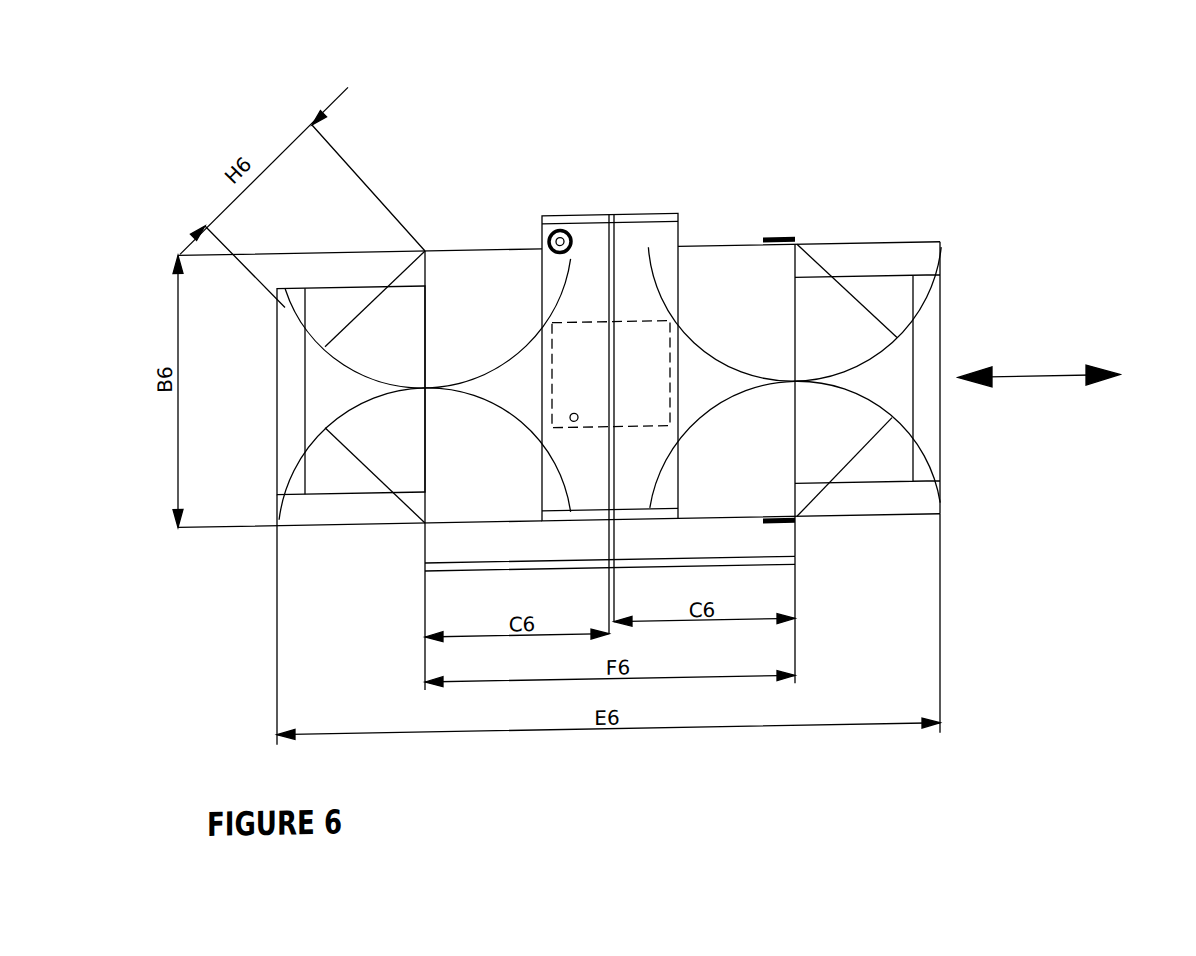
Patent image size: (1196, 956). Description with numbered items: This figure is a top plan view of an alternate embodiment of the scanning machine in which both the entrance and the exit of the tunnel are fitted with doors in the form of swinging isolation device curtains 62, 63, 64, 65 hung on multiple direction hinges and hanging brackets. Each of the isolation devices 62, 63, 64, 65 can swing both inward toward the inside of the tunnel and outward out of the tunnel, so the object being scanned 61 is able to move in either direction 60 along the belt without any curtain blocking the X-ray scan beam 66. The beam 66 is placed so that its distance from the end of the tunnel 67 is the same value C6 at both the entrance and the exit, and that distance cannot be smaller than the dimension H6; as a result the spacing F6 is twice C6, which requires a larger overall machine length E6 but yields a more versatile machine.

The direction 60 is at (1065, 402).
The object being scanned 61 is at (571, 423).
The swinging isolation device curtain 62 is at (853, 301).
The swinging isolation device curtain 63 is at (830, 488).
The swinging isolation device curtain 64 is at (367, 309).
The swinging isolation device curtain 65 is at (377, 479).
The X-ray scan beam 66 is at (615, 218).
The end of the tunnel 67 is at (787, 243).